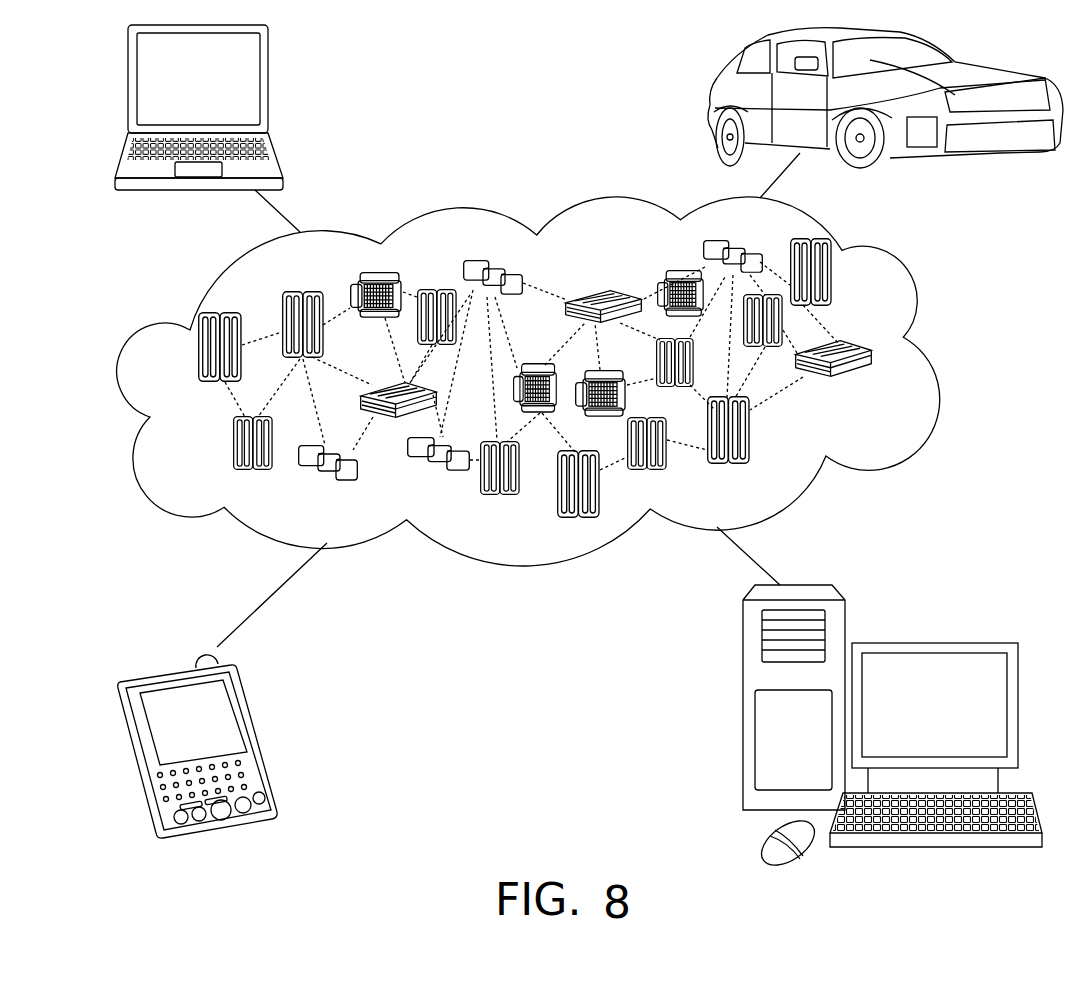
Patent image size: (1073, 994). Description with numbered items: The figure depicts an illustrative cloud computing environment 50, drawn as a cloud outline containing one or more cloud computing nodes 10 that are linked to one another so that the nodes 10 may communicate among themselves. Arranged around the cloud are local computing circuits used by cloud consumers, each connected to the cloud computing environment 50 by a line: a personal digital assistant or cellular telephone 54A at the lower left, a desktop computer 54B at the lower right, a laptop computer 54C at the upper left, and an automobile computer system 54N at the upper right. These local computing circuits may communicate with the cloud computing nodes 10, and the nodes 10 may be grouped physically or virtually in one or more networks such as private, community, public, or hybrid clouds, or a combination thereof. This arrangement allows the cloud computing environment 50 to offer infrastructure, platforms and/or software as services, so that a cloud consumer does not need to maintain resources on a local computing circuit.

The cloud computing nodes 10 is at (876, 388).
The cloud computing environment 50 is at (933, 357).
The personal digital assistant or cellular telephone 54A is at (257, 735).
The desktop computer 54B is at (930, 643).
The laptop computer 54C is at (268, 89).
The automobile computer system 54N is at (708, 107).